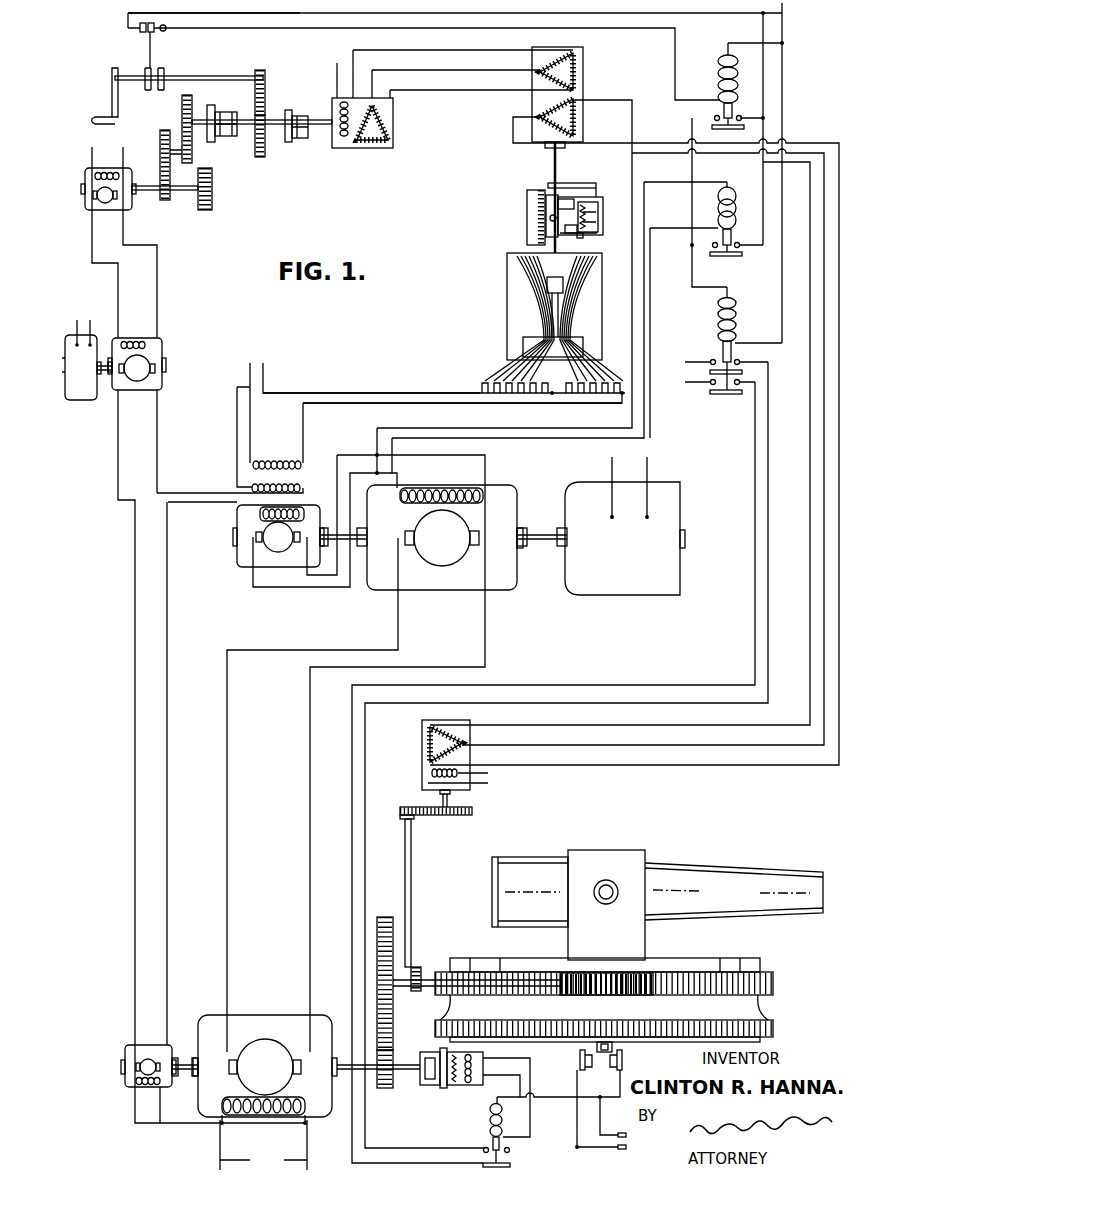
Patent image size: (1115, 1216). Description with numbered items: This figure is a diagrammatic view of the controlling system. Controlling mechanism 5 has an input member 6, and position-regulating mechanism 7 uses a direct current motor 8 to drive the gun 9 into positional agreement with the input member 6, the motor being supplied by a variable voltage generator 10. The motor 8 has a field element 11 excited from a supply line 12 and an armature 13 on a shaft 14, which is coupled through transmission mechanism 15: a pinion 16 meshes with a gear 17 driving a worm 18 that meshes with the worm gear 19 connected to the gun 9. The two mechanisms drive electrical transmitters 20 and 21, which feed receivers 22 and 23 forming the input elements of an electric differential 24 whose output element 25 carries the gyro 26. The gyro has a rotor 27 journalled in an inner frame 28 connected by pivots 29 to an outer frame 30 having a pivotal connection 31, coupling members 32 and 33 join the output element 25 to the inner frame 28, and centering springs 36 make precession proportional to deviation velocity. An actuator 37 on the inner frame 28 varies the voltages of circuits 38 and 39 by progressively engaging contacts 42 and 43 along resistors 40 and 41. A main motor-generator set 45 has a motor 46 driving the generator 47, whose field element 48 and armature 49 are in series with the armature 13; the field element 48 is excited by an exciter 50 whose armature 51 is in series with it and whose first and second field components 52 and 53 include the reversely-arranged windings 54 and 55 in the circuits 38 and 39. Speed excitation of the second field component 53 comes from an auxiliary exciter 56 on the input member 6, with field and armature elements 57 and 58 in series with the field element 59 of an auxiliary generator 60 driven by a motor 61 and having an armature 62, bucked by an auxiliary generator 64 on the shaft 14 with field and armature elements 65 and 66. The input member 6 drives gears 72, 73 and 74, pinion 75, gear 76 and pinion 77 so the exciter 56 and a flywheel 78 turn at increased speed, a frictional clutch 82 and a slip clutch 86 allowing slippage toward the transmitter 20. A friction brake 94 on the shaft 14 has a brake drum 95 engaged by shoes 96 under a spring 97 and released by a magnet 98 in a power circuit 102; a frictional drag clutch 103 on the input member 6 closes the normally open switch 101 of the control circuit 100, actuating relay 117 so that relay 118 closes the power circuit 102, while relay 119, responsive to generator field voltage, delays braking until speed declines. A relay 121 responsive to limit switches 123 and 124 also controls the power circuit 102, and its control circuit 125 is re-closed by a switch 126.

The controlling mechanism 5 is at (210, 65).
The input member 6 is at (112, 95).
The position-regulating mechanism 7 is at (350, 641).
The direct current motor 8 is at (265, 1077).
The gun 9 is at (540, 858).
The variable voltage generator 10 is at (468, 584).
The field element 11 is at (265, 1112).
The supply line 12 is at (263, 1145).
The armature 13 is at (270, 1040).
The shaft 14 is at (186, 1072).
The transmission mechanism 15 is at (464, 1020).
The pinion 16 is at (385, 1090).
The gear 17 is at (394, 1006).
The worm 18 is at (592, 996).
The worm gear 19 is at (690, 972).
The electrical transmitter 20 is at (343, 148).
The electrical transmitter 21 is at (424, 764).
The receiver 22 is at (585, 70).
The receiver 23 is at (585, 120).
The electric differential 24 is at (520, 110).
The output element 25 is at (558, 160).
The gyro 26 is at (566, 206).
The rotor 27 is at (528, 238).
The inner frame 28 is at (600, 235).
The pivots 29 is at (550, 222).
The outer frame 30 is at (556, 202).
The pivotal connection 31 is at (550, 190).
The coupling member 32 is at (585, 183).
The coupling member 33 is at (600, 200).
The centering springs 36 is at (600, 220).
The actuator 37 is at (562, 247).
The circuit 38 is at (303, 424).
The circuit 39 is at (248, 424).
The resistor 40 is at (612, 380).
The resistor 41 is at (495, 380).
The contacts 42 is at (578, 300).
The contacts 43 is at (520, 295).
The main motor-generator set 45 is at (545, 610).
The motor 46 is at (628, 590).
The generator 47 is at (449, 538).
The field element 48 is at (445, 488).
The armature 49 is at (442, 566).
The exciter 50 is at (268, 523).
The armature 51 is at (270, 542).
The first field component 52 is at (273, 463).
The second field component 53 is at (298, 510).
The winding 54 is at (250, 488).
The winding 55 is at (302, 465).
The auxiliary exciter 56 is at (88, 172).
The field element 57 is at (108, 172).
The armature element 58 is at (100, 196).
The field element 59 is at (134, 342).
The auxiliary generator 60 is at (153, 348).
The motor 61 is at (85, 388).
The armature 62 is at (146, 362).
The auxiliary generator 64 is at (132, 1072).
The field element 65 is at (146, 1086).
The armature element 66 is at (142, 1062).
The gear 72 is at (265, 75).
The gear 73 is at (263, 158).
The gear 74 is at (182, 108).
The pinion 75 is at (192, 155).
The gear 76 is at (160, 136).
The pinion 77 is at (165, 200).
The flywheel 78 is at (210, 210).
The frictional clutch 82 is at (222, 108).
The frictional slip clutch 86 is at (298, 110).
The friction brake 94 is at (459, 1071).
The brake drum 95 is at (425, 1080).
The shoes 96 is at (442, 1050).
The spring 97 is at (470, 1086).
The magnet 98 is at (485, 1062).
The control circuit 100 is at (280, 14).
The normally open switch 101 is at (138, 30).
The power circuit 102 is at (755, 448).
The frictional drag clutch 103 is at (152, 66).
The relay 117 is at (718, 86).
The relay 118 is at (755, 328).
The relay 119 is at (737, 195).
The relay 121 is at (489, 1131).
The limit switch 123 is at (580, 1058).
The limit switch 124 is at (624, 1058).
The control circuit 125 is at (565, 1146).
The switch 126 is at (622, 1147).